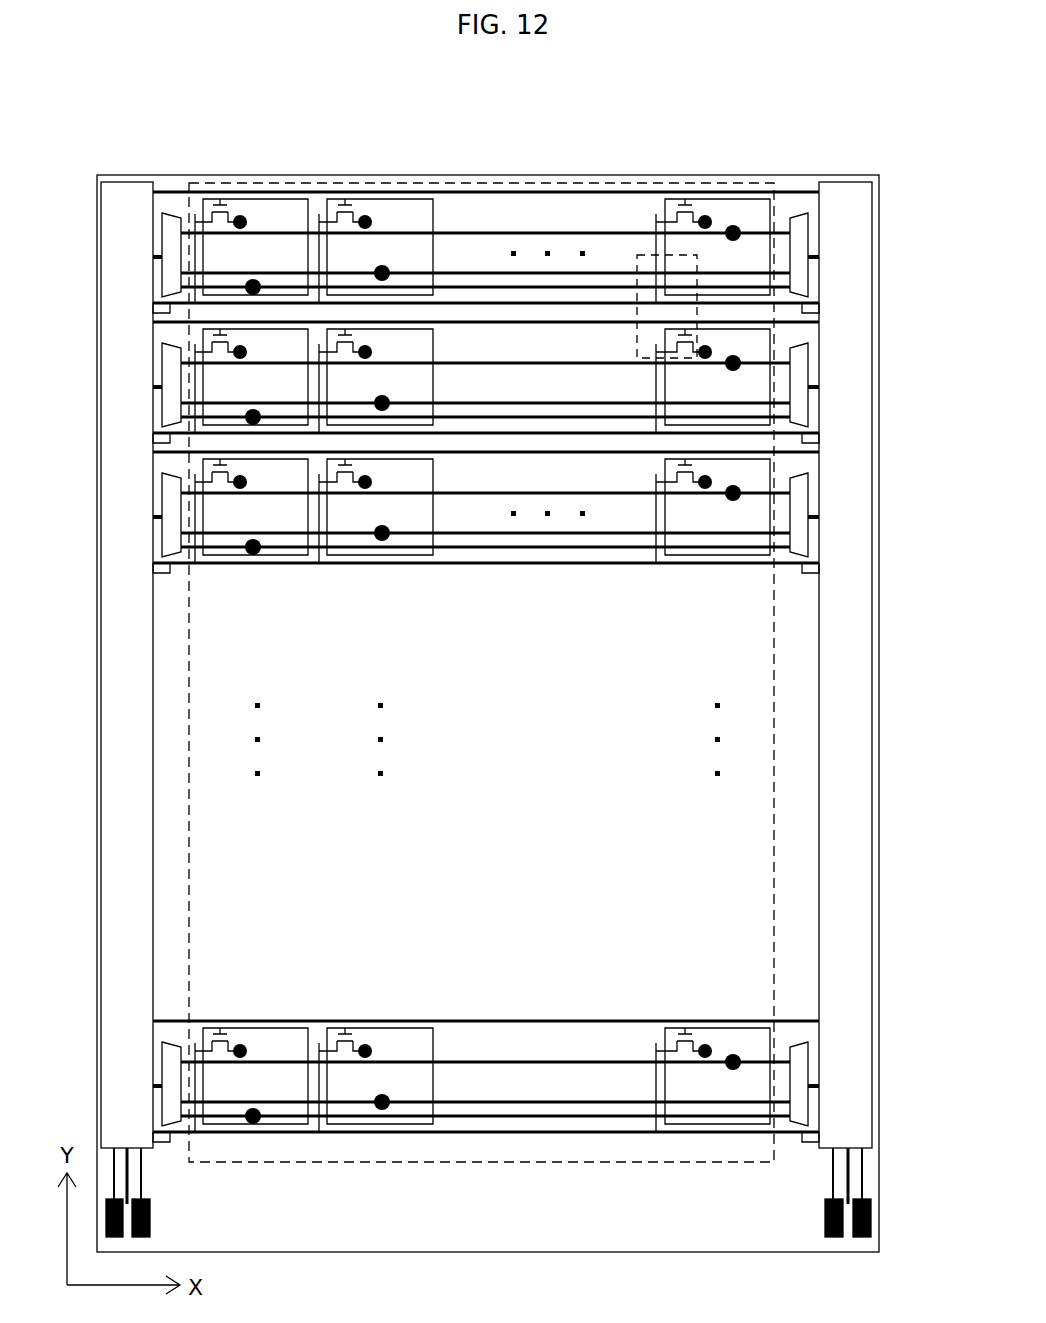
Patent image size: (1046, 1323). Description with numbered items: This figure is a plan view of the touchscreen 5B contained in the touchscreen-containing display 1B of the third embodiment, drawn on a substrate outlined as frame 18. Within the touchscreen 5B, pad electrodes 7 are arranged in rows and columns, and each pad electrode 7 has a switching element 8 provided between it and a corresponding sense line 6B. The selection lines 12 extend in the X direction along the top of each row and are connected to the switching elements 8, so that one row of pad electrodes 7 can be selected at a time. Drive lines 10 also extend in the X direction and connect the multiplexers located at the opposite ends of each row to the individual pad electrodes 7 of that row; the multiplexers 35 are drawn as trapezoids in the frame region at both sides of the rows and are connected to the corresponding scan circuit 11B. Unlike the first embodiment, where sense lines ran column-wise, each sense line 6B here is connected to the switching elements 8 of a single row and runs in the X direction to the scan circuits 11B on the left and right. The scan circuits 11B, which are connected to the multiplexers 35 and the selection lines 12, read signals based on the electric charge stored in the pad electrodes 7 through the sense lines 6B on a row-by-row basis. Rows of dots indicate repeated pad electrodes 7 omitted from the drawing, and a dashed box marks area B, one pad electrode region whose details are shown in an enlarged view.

The touchscreen-containing display 1B is at (870, 105).
The touchscreen 5B is at (875, 157).
The substrate 18 is at (884, 206).
The scan circuit 11B is at (874, 251).
The selection line 12 is at (394, 192).
The sense line 6B is at (503, 303).
The drive line 10 is at (591, 287).
The multiplexer 35 is at (796, 213).
The pad electrode 7 is at (272, 199).
The switching element 8 is at (222, 205).
The area B is at (697, 333).